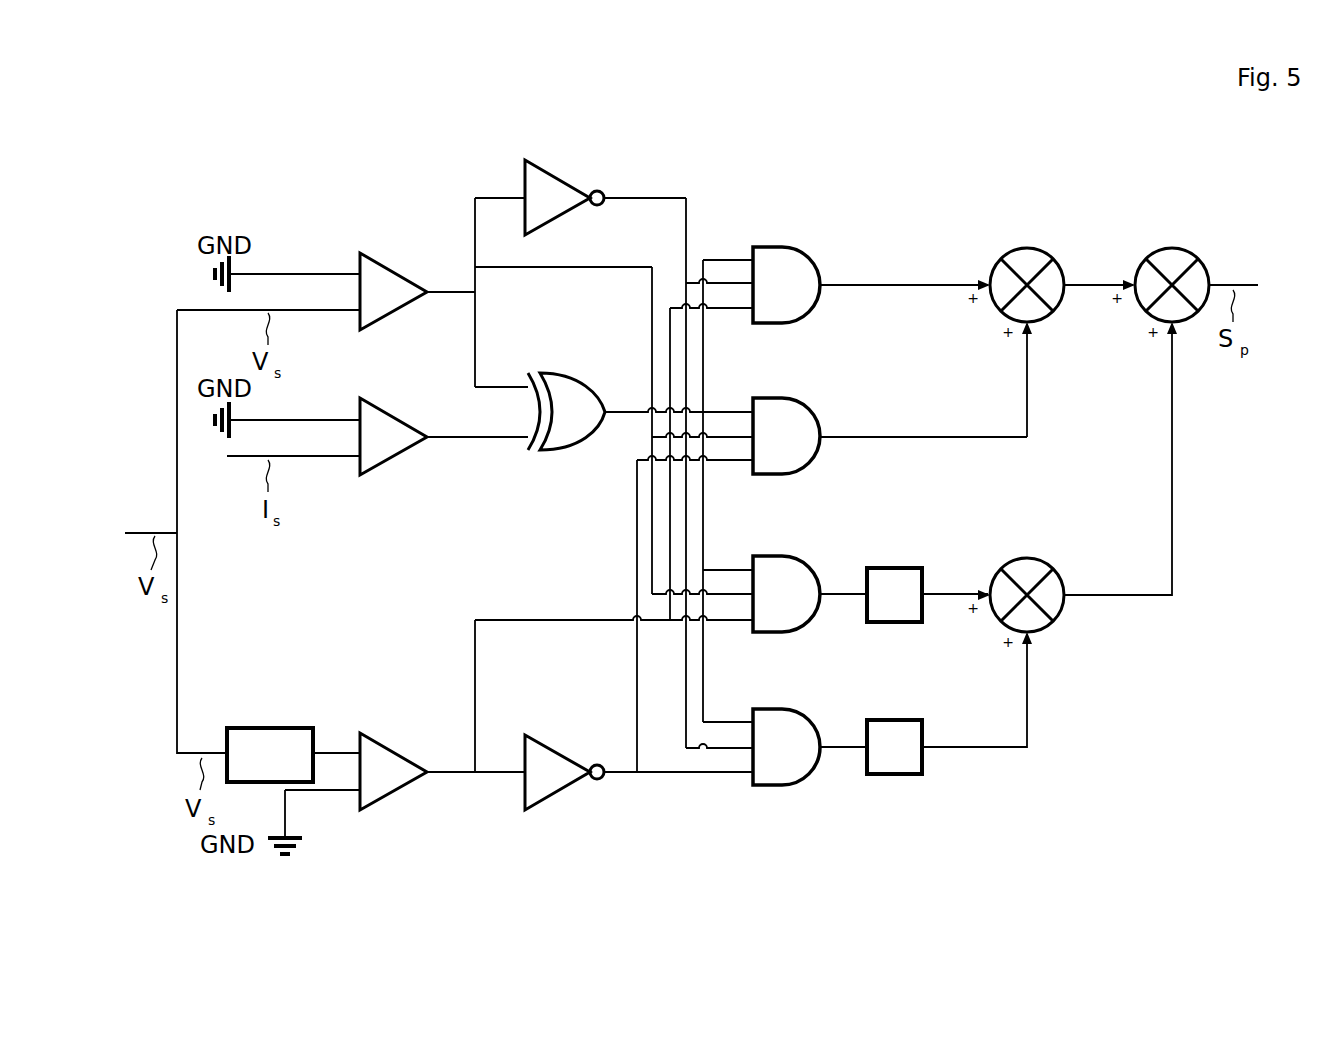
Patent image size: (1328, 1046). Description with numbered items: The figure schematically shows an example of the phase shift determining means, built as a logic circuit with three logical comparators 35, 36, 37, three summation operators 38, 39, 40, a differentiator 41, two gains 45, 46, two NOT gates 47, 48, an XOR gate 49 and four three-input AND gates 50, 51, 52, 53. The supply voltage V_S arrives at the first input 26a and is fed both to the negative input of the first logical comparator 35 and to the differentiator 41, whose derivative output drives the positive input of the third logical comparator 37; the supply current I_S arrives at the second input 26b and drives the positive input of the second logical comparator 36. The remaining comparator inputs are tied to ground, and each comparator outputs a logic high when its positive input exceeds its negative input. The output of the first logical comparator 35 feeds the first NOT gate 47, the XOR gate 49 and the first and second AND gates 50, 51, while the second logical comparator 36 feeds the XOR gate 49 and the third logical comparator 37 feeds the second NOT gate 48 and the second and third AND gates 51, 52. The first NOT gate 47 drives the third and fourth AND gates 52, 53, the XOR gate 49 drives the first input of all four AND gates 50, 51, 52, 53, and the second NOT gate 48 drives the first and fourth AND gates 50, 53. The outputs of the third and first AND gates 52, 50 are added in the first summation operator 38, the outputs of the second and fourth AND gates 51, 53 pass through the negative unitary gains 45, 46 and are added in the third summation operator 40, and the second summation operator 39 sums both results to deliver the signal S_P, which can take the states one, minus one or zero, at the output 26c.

The first input 26a is at (125, 532).
The second input 26b is at (227, 460).
The output 26c is at (1258, 285).
The first logical comparator 35 is at (395, 264).
The second logical comparator 36 is at (395, 409).
The third logical comparator 37 is at (395, 744).
The first summation operator 38 is at (1027, 247).
The second summation operator 39 is at (1172, 247).
The third summation operator 40 is at (1027, 556).
The differentiator 41 is at (270, 755).
The first gain 45 is at (893, 567).
The second gain 46 is at (893, 719).
The first NOT gate 47 is at (558, 168).
The second NOT gate 48 is at (558, 745).
The XOR gate 49 is at (577, 371).
The first AND gate 50 is at (786, 436).
The second AND gate 51 is at (786, 594).
The third AND gate 52 is at (786, 285).
The fourth AND gate 53 is at (786, 747).